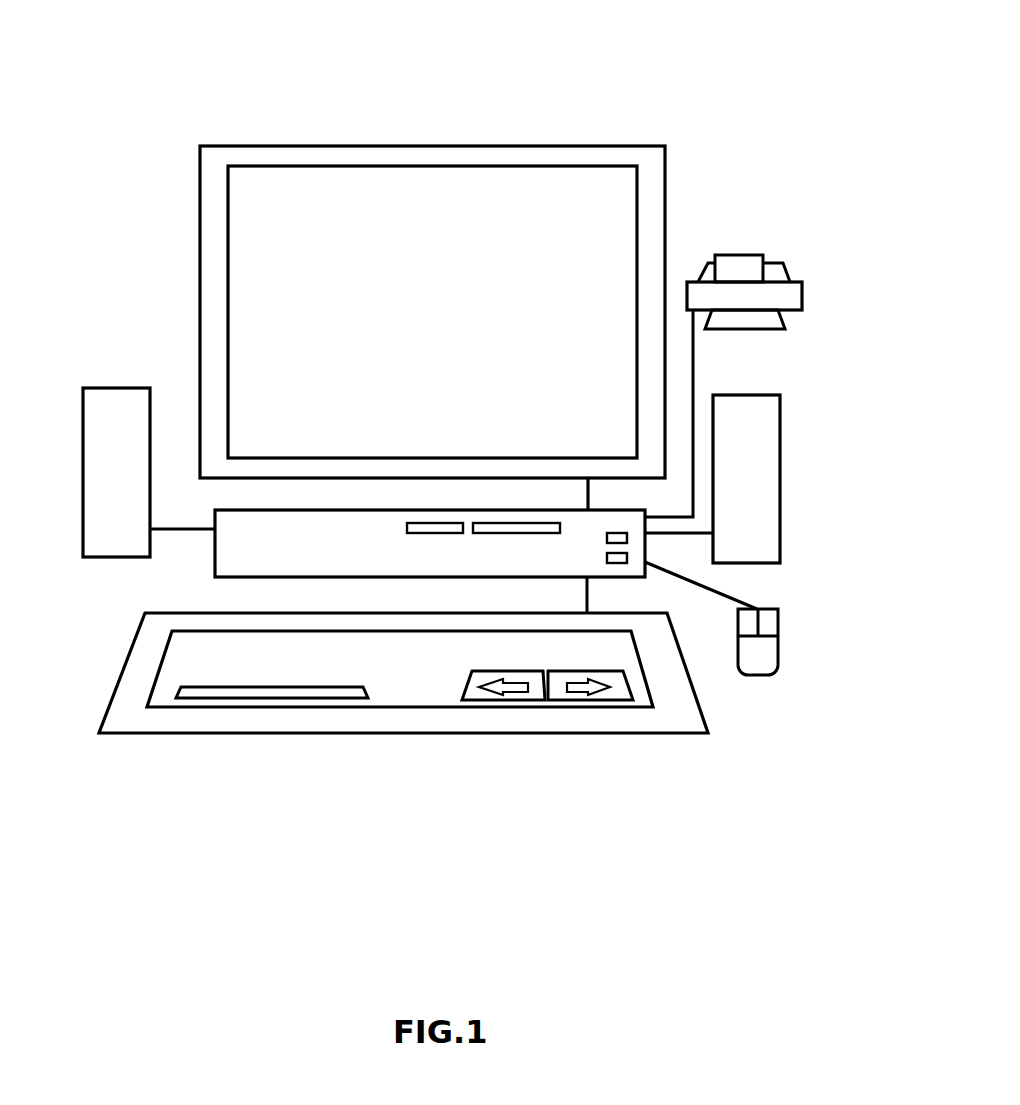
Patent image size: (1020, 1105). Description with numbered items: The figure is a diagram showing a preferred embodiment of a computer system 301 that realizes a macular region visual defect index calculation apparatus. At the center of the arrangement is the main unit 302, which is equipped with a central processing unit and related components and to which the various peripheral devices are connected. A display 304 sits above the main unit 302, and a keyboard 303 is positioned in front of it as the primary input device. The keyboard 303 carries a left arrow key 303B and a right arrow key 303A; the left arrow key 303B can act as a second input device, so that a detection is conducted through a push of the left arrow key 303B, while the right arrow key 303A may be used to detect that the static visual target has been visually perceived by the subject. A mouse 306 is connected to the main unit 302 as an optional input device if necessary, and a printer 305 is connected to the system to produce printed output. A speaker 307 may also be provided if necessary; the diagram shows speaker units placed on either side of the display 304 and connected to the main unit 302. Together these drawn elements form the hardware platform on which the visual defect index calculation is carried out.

The computer system 301 is at (567, 103).
The main unit 302 is at (255, 548).
The keyboard 303 is at (403, 733).
The right arrow key 303A is at (615, 693).
The left arrow key 303B is at (482, 693).
The display 304 is at (383, 197).
The printer 305 is at (707, 290).
The mouse 306 is at (758, 665).
The speaker 307 is at (132, 400).